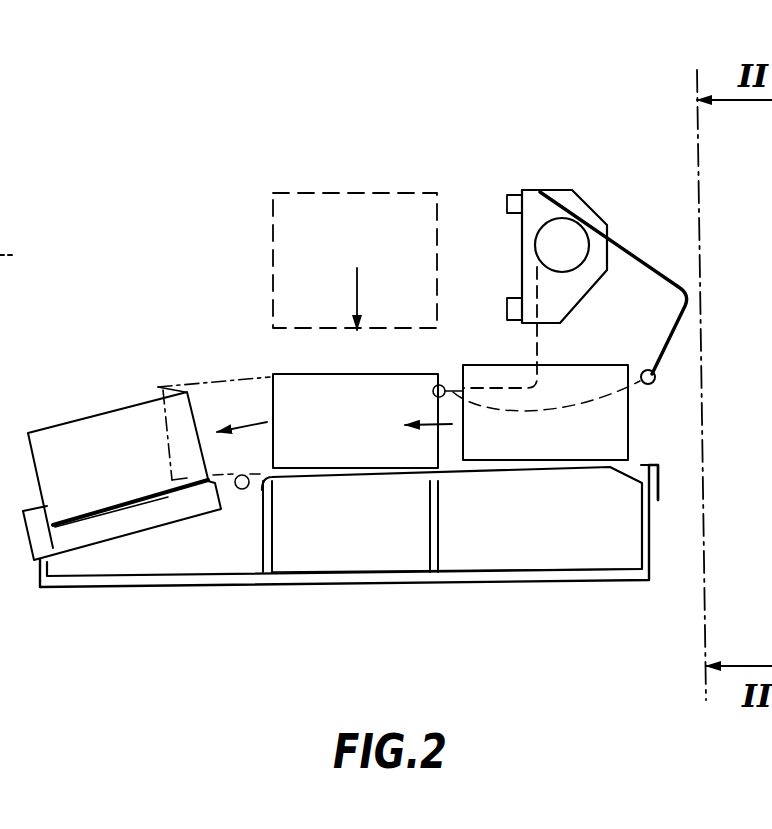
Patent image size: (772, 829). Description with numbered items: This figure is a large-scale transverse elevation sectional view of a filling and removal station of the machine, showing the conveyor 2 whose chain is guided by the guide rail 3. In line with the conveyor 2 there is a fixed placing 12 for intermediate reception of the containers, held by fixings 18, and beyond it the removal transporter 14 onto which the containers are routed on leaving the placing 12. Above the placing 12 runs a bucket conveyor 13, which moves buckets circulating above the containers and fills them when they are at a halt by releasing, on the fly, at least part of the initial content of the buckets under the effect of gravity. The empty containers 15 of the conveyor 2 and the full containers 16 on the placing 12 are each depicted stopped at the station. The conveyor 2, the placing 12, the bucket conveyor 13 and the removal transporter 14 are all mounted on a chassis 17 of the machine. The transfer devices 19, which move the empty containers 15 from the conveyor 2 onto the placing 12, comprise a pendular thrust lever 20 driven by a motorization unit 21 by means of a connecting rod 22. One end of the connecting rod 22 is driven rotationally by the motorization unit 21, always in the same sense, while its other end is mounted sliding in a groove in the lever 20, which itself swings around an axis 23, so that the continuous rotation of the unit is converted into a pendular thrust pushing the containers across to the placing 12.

The conveyor 2 is at (552, 512).
The guide rail 3 is at (660, 496).
The fixed placing 12 is at (358, 507).
The bucket conveyor 13 is at (318, 223).
The removal transporter 14 is at (108, 463).
The empty containers 15 is at (600, 437).
The full containers 16 is at (297, 397).
The chassis 17 is at (657, 527).
The fixings 18 is at (270, 520).
The transfer devices 19 is at (591, 299).
The pendular thrust lever 20 is at (662, 264).
The motorization unit 21 is at (533, 221).
The connecting rod 22 is at (568, 236).
The axis 23 is at (533, 188).